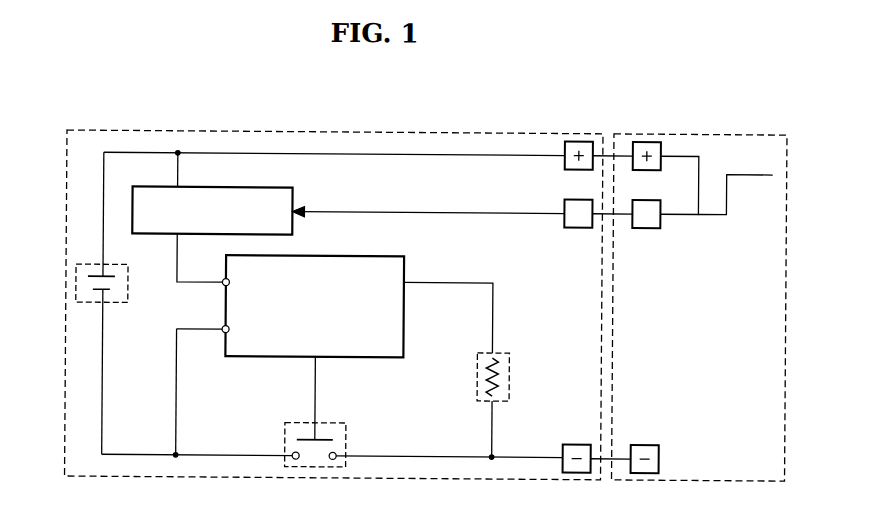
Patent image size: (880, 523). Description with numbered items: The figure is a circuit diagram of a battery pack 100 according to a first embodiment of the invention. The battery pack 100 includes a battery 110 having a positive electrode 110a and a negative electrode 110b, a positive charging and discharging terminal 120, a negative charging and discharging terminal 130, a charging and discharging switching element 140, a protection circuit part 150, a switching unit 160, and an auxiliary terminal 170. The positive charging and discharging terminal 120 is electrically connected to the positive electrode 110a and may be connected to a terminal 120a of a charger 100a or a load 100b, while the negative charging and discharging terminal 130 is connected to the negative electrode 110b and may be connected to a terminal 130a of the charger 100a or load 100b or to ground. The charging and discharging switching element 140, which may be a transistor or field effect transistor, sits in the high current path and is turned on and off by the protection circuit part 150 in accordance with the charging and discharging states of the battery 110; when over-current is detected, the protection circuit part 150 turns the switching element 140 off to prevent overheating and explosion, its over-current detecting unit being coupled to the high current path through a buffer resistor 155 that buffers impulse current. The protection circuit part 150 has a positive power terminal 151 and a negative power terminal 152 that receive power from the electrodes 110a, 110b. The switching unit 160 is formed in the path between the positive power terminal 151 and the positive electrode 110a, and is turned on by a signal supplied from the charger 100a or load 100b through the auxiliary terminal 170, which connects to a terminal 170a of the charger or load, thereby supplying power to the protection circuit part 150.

The battery pack 100 is at (331, 130).
The charger 100a is at (733, 130).
The load 100b is at (716, 272).
The battery 110 is at (75, 282).
The positive electrode 110a is at (101, 274).
The negative electrode 110b is at (101, 294).
The positive charging and discharging terminal 120 is at (579, 138).
The terminal of charger or load 120a is at (647, 138).
The negative charging and discharging terminal 130 is at (579, 441).
The terminal of charger or load 130a is at (647, 441).
The charging and discharging switching element 140 is at (318, 466).
The protection circuit part 150 is at (324, 306).
The positive power terminal 151 is at (223, 278).
The negative power terminal 152 is at (223, 332).
The buffer resistor 155 is at (499, 350).
The switching unit 160 is at (283, 186).
The auxiliary terminal 170 is at (579, 224).
The terminal of charger or load 170a is at (647, 224).